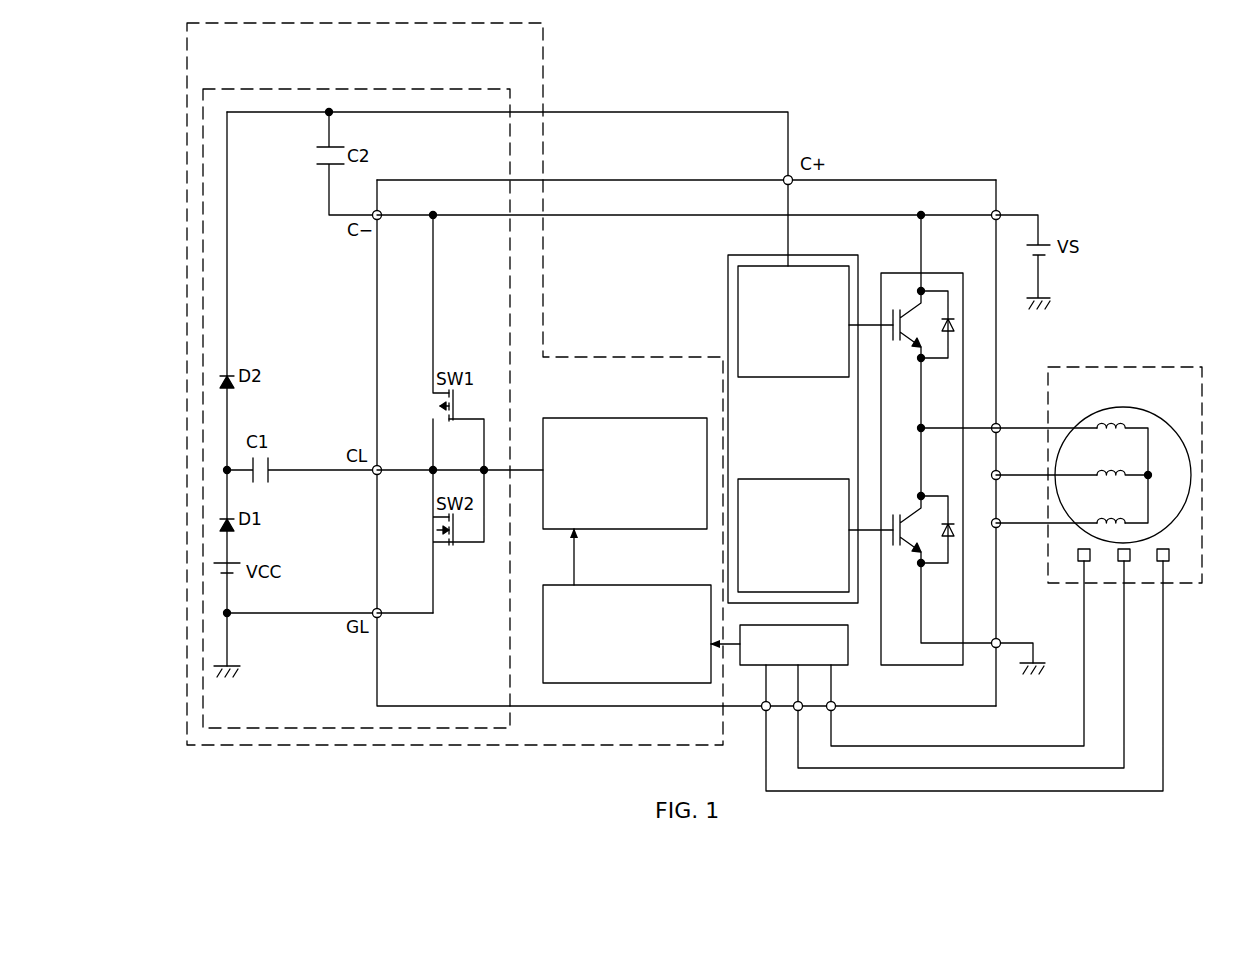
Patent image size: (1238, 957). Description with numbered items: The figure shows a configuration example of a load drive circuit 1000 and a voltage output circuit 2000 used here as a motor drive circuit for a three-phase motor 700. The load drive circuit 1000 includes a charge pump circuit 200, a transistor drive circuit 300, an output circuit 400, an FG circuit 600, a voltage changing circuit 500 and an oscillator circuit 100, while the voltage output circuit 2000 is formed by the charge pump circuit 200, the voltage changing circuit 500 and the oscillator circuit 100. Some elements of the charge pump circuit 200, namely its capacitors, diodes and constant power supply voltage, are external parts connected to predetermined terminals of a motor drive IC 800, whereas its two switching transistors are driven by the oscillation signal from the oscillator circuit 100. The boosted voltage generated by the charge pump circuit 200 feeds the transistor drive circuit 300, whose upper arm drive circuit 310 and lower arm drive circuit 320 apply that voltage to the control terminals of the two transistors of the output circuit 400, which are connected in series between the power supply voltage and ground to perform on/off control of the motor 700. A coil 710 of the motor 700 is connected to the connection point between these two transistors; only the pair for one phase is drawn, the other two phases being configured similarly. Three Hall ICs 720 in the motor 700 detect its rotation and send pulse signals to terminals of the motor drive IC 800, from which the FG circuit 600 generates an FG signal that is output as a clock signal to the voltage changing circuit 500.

The voltage output circuit 2000 is at (543, 60).
The charge pump circuit 200 is at (430, 89).
The oscillator circuit 100 is at (658, 418).
The voltage changing circuit 500 is at (658, 585).
The transistor drive circuit 300 is at (728, 268).
The upper arm drive circuit 310 is at (805, 377).
The lower arm drive circuit 320 is at (797, 479).
The output circuit 400 is at (943, 273).
The FG circuit 600 is at (848, 647).
The motor 700 is at (1136, 466).
The coil 710 is at (1100, 426).
The Hall IC 720 is at (1090, 555).
The motor drive IC 800 is at (996, 330).
The load drive circuit 1000 is at (917, 166).